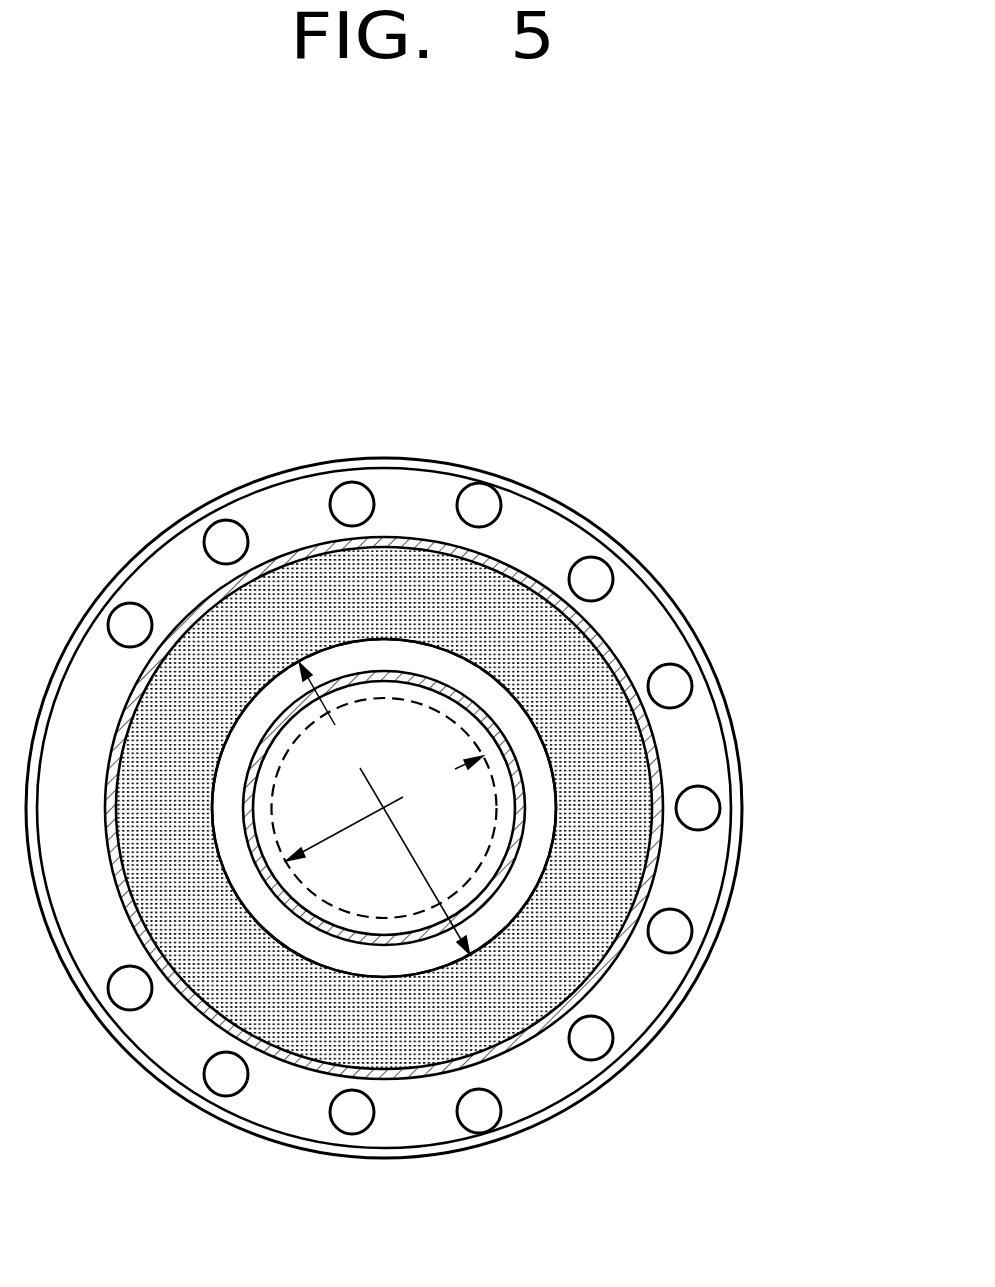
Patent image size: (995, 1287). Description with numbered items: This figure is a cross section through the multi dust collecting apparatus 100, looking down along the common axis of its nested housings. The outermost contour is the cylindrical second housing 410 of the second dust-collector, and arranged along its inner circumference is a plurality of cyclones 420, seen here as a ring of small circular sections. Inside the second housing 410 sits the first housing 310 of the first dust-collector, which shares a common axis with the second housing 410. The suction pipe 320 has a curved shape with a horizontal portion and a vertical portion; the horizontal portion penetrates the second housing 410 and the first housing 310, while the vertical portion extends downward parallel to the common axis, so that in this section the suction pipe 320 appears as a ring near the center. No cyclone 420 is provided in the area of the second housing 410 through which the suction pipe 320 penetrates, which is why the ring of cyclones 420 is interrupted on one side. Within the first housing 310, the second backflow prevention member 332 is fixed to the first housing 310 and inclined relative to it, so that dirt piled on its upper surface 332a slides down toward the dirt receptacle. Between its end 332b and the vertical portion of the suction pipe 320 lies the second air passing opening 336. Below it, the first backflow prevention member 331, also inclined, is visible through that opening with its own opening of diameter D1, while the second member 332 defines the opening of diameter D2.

The multi dust collecting apparatus 100 is at (681, 379).
The first housing 310 is at (600, 628).
The suction pipe 320 is at (417, 673).
The first backflow prevention member 331 is at (498, 824).
The second backflow prevention member 332 is at (473, 853).
The upper surface 332a is at (563, 942).
The end 332b is at (496, 927).
The second air passing opening 336 is at (357, 661).
The second housing 410 is at (740, 745).
The cyclones 420 is at (591, 563).